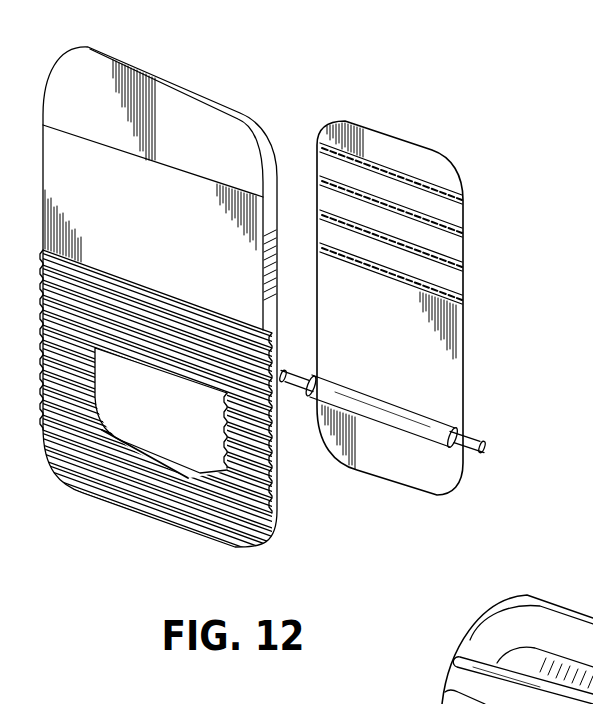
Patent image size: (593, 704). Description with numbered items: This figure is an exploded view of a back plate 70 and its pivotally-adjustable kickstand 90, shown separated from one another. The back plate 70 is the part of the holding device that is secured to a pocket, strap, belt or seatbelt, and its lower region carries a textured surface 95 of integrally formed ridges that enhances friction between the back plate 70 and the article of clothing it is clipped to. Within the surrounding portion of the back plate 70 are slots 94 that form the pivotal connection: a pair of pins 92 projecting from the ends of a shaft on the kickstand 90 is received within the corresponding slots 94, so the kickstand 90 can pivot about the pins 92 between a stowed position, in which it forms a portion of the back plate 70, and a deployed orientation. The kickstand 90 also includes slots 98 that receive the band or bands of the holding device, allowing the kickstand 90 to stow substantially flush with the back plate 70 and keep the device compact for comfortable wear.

The back plate 70 is at (158, 97).
The kickstand 90 is at (366, 365).
The pins 92 is at (483, 441).
The slots 94 is at (240, 442).
The textured surface 95 is at (257, 503).
The slots 98 is at (463, 258).